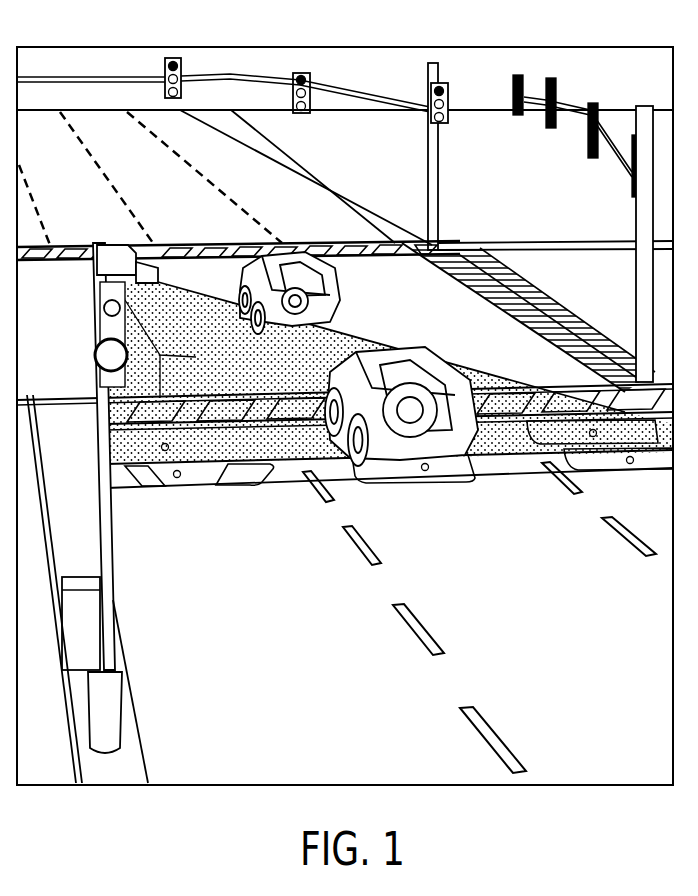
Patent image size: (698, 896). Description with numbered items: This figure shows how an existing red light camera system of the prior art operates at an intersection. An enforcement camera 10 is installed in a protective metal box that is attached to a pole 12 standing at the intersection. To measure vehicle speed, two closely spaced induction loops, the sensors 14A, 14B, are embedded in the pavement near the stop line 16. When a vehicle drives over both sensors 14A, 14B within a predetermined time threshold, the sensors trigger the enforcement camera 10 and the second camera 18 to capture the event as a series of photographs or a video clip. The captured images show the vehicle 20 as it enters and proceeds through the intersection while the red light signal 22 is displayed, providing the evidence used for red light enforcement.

The enforcement camera 10 is at (107, 259).
The pole 12 is at (104, 548).
The sensor 14A is at (179, 478).
The sensor 14B is at (164, 451).
The stop line 16 is at (519, 455).
The camera 18 is at (104, 320).
The vehicle 20 is at (443, 448).
The red light signal 22 is at (301, 76).